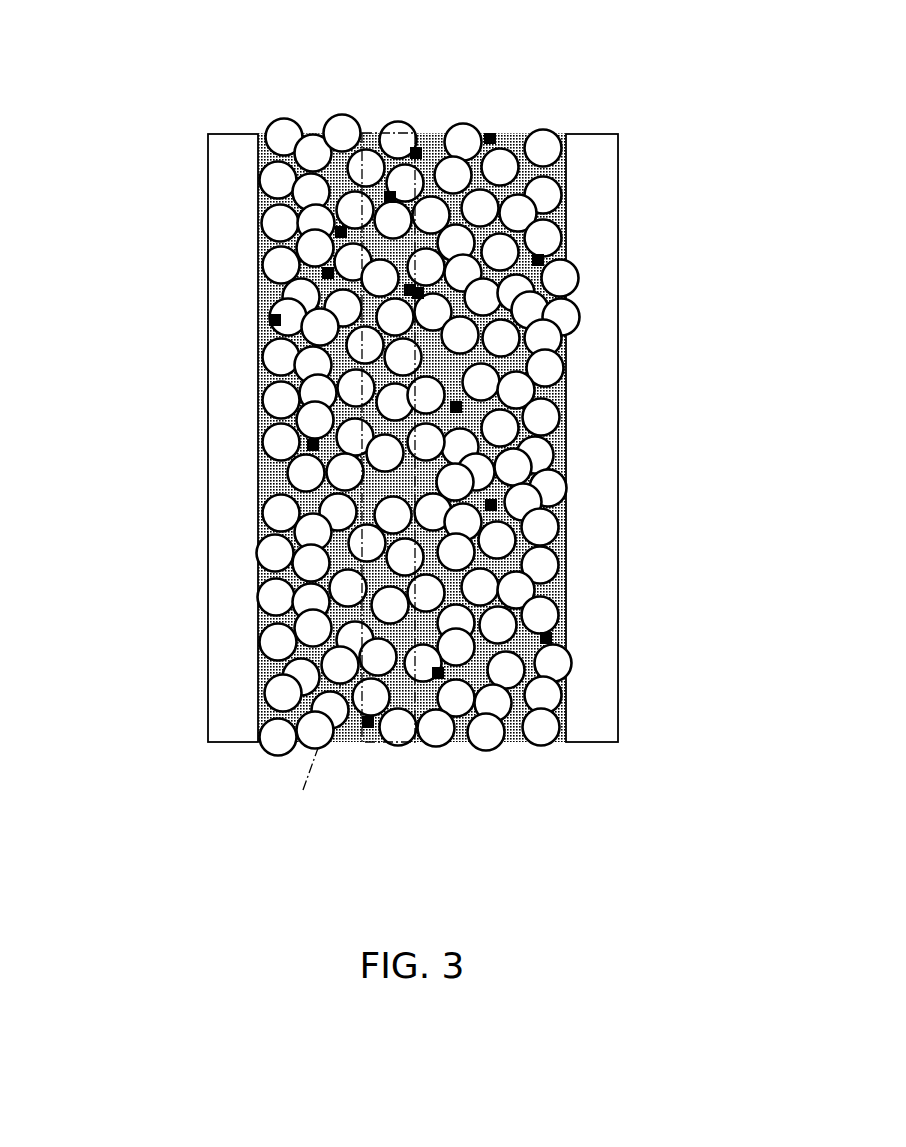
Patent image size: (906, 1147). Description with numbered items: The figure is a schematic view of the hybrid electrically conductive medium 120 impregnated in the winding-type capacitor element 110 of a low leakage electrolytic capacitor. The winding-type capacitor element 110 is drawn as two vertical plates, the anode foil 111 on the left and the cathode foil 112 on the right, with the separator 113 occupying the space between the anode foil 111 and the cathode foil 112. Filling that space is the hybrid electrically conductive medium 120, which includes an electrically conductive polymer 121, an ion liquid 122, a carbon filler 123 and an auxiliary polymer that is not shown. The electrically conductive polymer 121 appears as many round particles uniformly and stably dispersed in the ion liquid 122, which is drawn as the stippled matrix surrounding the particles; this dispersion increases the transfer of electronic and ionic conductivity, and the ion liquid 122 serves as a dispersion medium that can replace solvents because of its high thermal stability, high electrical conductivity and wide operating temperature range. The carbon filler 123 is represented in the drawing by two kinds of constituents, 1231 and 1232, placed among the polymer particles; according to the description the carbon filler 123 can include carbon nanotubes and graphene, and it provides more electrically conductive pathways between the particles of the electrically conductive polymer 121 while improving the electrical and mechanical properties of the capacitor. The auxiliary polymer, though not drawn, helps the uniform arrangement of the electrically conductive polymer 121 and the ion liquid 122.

The winding-type capacitor element 110 is at (409, 501).
The anode foil 111 is at (228, 383).
The cathode foil 112 is at (597, 383).
The separator 113 is at (337, 812).
The hybrid electrically conductive medium 120 is at (319, 459).
The electrically conductive polymer 121 is at (397, 123).
The ion liquid 122 is at (326, 561).
The carbon filler 123 is at (410, 498).
The pillar elements 1231 is at (387, 803).
The pillar region 1232 is at (383, 742).